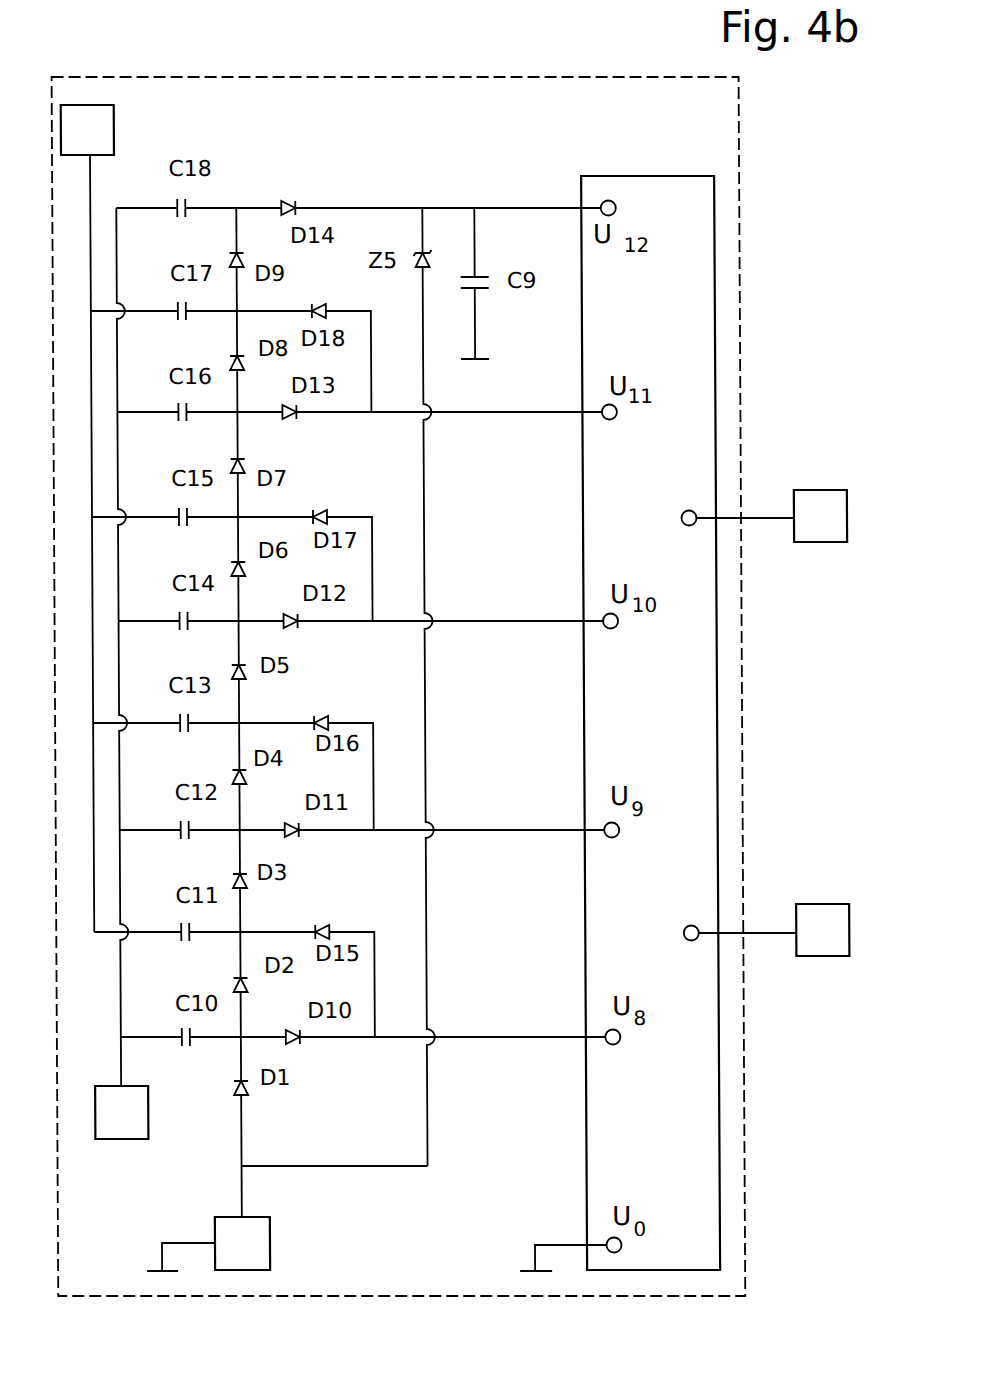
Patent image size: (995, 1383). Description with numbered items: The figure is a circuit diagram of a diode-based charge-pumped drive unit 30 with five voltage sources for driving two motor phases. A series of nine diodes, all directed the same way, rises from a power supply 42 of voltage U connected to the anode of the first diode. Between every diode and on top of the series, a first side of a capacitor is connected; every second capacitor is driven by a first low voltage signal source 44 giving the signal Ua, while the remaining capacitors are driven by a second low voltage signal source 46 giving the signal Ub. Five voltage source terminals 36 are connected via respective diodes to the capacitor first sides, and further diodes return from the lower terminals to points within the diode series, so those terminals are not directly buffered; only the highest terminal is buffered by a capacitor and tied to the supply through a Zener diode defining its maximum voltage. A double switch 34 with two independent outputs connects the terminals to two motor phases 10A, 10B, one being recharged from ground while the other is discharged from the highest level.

The drive unit 30 is at (583, 88).
The switch 34 is at (671, 180).
The voltage source terminal 36 is at (610, 200).
The power supply 42 is at (264, 1263).
The first low voltage signal source 44 is at (148, 1123).
The second low voltage signal source 46 is at (117, 121).
The motor phase 10A is at (821, 497).
The motor phase 10B is at (821, 915).